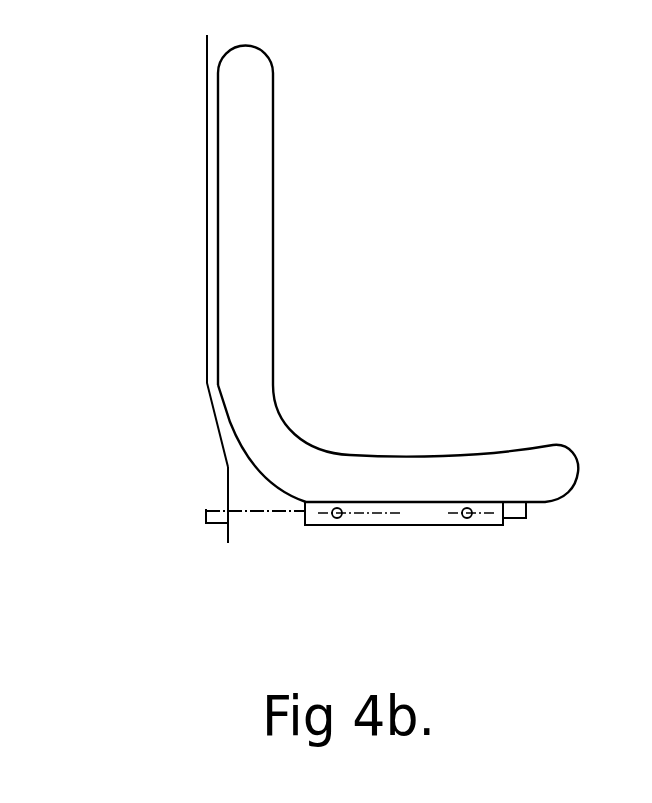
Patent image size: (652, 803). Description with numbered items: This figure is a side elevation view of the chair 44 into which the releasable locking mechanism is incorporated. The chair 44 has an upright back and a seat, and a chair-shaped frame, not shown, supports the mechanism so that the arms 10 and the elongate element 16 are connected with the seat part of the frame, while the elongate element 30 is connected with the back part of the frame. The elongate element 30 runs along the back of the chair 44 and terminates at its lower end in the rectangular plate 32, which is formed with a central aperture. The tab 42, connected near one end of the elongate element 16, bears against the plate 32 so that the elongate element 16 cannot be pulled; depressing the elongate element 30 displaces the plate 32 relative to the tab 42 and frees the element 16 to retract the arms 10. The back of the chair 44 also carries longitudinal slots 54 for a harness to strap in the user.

The arms 10 is at (450, 527).
The elongate element 16 is at (287, 508).
The elongate element 30 is at (203, 151).
The rectangular plate 32 is at (226, 487).
The tab 42 is at (212, 527).
The chair 44 is at (273, 198).
The longitudinal slots 54 is at (19, 179).